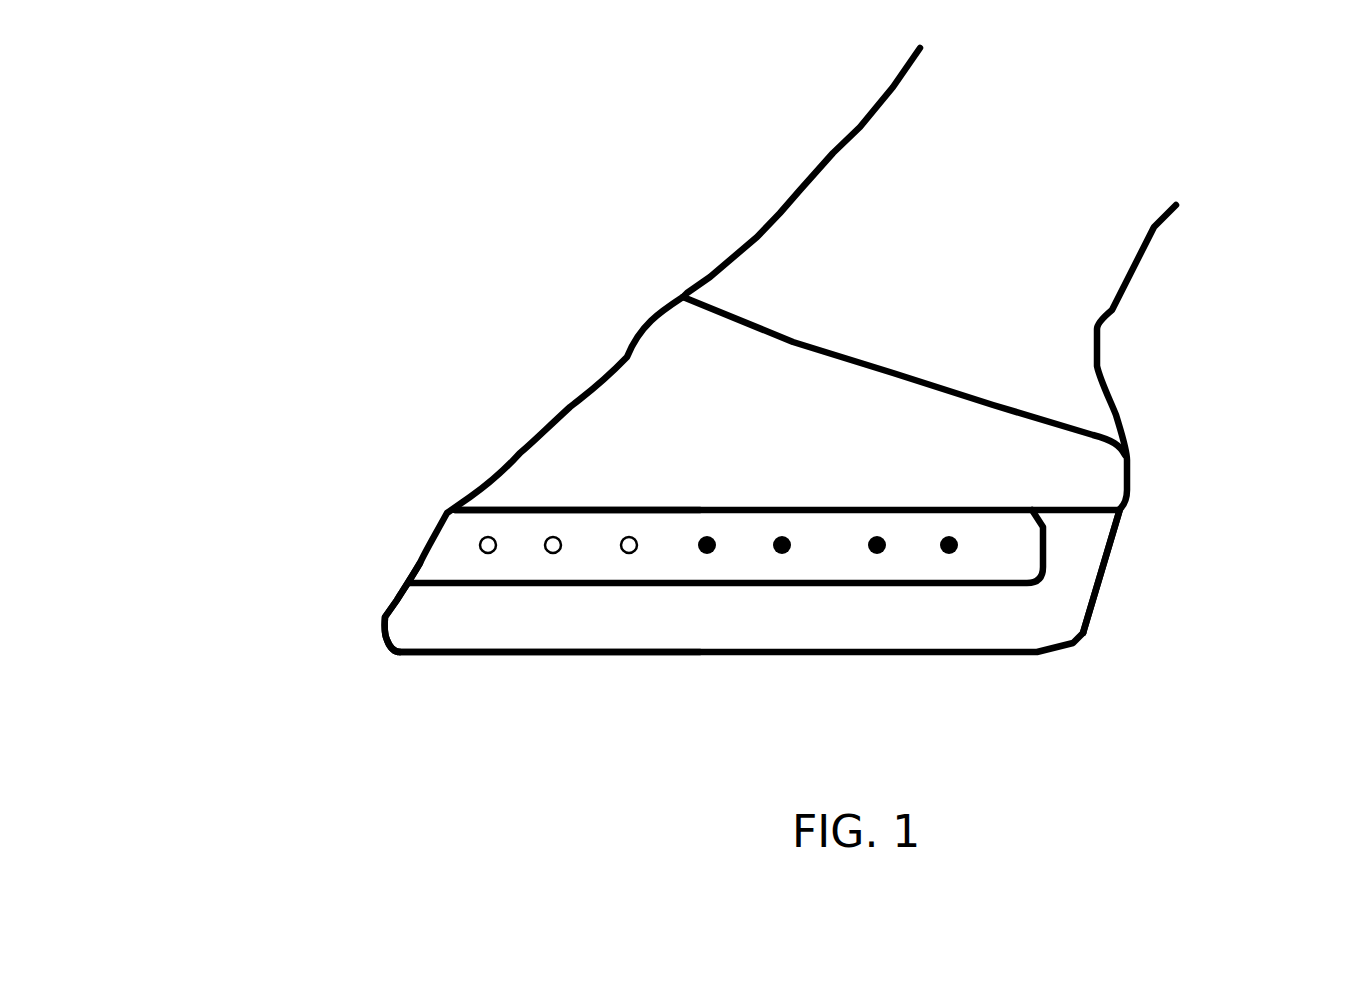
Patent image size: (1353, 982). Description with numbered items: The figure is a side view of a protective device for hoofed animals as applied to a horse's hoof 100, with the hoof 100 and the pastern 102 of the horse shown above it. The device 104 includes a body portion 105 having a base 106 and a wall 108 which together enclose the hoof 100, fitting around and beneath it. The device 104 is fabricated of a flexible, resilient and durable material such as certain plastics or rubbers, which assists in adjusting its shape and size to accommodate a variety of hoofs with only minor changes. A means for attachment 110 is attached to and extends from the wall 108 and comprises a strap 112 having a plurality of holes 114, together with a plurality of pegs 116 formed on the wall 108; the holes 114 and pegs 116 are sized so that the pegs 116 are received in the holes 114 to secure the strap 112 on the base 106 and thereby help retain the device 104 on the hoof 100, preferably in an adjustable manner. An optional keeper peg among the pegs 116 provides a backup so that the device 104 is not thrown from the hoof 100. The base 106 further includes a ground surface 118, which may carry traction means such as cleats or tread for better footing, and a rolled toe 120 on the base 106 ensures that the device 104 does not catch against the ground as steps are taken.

The hoof 100 is at (640, 387).
The pastern 102 is at (808, 258).
The device 104 is at (1154, 509).
The body portion 105 is at (1154, 661).
The base 106 is at (647, 637).
The wall 108 is at (1069, 539).
The means for attachment 110 is at (378, 507).
The strap 112 is at (567, 518).
The holes 114 is at (637, 552).
The pegs 116 is at (885, 553).
The ground surface 118 is at (495, 661).
The rolled toe 120 is at (380, 632).